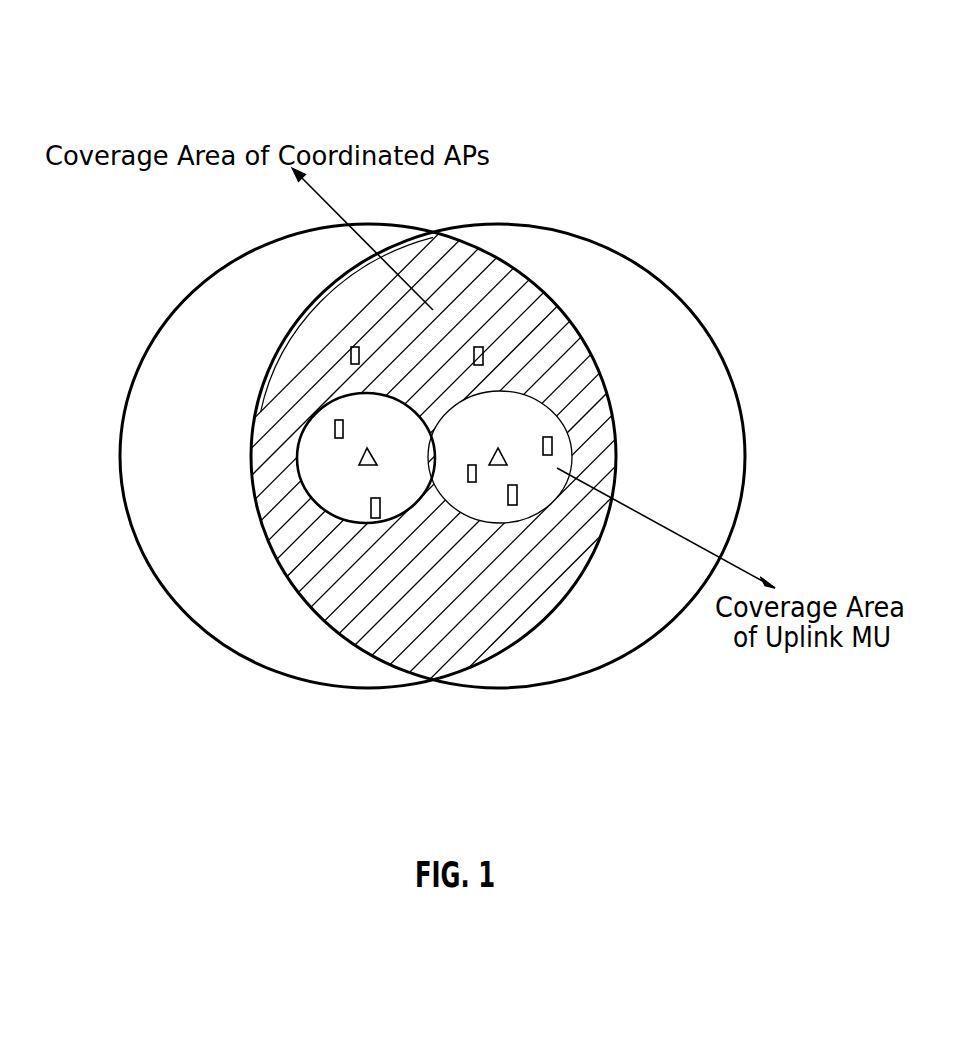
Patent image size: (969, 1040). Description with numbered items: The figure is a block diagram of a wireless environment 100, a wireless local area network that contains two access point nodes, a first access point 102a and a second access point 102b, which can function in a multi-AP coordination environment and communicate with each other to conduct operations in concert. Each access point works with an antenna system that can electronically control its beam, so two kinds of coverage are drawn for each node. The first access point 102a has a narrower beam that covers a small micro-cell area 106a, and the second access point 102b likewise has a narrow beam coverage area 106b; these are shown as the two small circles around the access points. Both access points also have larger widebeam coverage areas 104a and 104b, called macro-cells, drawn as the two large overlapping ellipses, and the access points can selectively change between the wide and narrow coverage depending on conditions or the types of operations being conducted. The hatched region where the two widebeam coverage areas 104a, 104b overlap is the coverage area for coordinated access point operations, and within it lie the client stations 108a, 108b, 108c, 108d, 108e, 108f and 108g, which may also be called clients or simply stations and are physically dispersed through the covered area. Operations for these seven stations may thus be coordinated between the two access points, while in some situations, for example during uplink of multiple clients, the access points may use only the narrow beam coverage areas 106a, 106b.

The wireless environment 100 is at (693, 55).
The access point AP1 102a is at (552, 374).
The access point AP2 102b is at (248, 398).
The widebeam coverage area of AP1 104a is at (697, 304).
The widebeam coverage area of AP2 104b is at (189, 626).
The narrow beam coverage area of AP1 106a is at (477, 602).
The narrow beam coverage area of AP2 106b is at (329, 571).
The client station STA1 108a is at (675, 403).
The client station STA2 108b is at (574, 634).
The client station STA3 108c is at (419, 607).
The client station STA4 108d is at (298, 324).
The client station STA5 108e is at (316, 644).
The client station STA6 108f is at (411, 274).
The client station STA7 108g is at (534, 274).